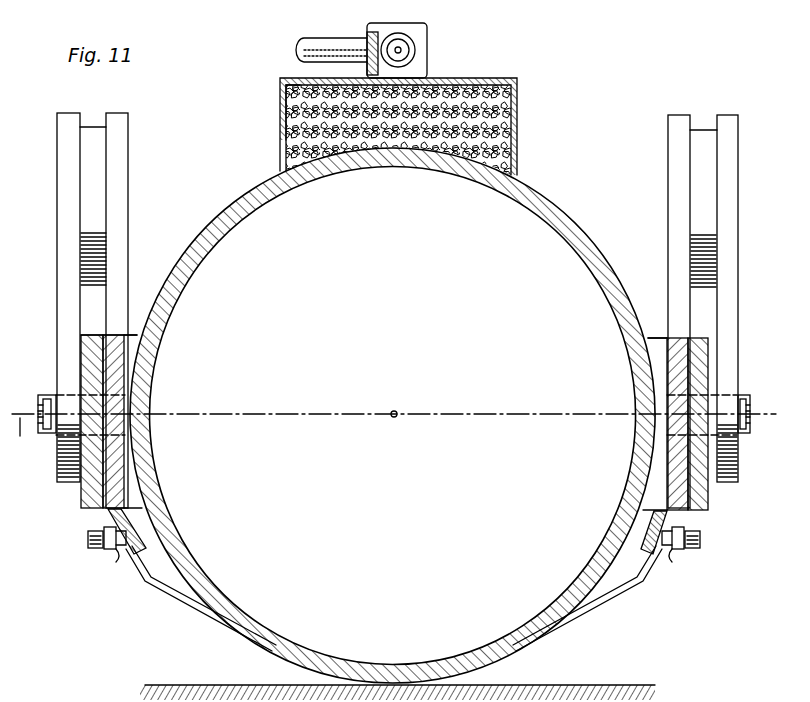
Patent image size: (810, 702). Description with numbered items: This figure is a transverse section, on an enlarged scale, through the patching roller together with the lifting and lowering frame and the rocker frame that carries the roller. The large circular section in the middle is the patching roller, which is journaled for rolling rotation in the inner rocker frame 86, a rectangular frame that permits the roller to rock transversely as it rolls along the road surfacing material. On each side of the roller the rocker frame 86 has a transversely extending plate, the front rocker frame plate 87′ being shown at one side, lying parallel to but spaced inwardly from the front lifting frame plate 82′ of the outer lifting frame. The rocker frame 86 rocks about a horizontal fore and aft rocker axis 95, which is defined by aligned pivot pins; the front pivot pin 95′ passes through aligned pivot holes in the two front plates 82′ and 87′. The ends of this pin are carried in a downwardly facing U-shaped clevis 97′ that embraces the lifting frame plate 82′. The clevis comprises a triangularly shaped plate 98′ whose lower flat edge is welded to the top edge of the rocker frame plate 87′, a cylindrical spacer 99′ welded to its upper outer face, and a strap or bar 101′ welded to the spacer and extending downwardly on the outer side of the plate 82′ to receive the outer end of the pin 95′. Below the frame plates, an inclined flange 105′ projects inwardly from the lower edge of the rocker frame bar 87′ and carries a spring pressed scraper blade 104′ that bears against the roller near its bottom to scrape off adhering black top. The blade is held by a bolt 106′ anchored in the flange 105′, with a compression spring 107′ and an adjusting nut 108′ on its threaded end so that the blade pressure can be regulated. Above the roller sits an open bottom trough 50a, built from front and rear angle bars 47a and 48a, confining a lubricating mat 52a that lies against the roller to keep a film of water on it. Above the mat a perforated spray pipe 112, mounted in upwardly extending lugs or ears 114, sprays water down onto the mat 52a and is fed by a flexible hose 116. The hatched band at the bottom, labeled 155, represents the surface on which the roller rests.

The inner rocker frame 86 is at (142, 337).
The ground 155 is at (397, 693).
The open bottom trough 50a is at (520, 95).
The rear angle bar 48a is at (514, 125).
The front angle bar 47a is at (284, 121).
The lubricating mat 52a is at (400, 118).
The lugs or ears 114 is at (430, 52).
The perforated spray pipe 112 is at (416, 47).
The flexible hose 116 is at (312, 42).
The front clevis 97′ is at (53, 142).
The front strap or bar 101′ is at (60, 252).
The front triangularly shaped plate 98′ is at (116, 163).
The front cylindrical spacer 99′ is at (88, 144).
The front lifting frame plate 82′ is at (92, 356).
The front rocker frame plate 87′ is at (128, 348).
The front pivot pin 95′ is at (48, 398).
The fore and aft rocker axis 95 is at (770, 418).
The front inclined mounting flange 105′ is at (140, 549).
The front nut 108′ is at (89, 545).
The front bolt 106′ is at (100, 529).
The front compression spring 107′ is at (116, 556).
The front scraper blade 104′ is at (157, 592).